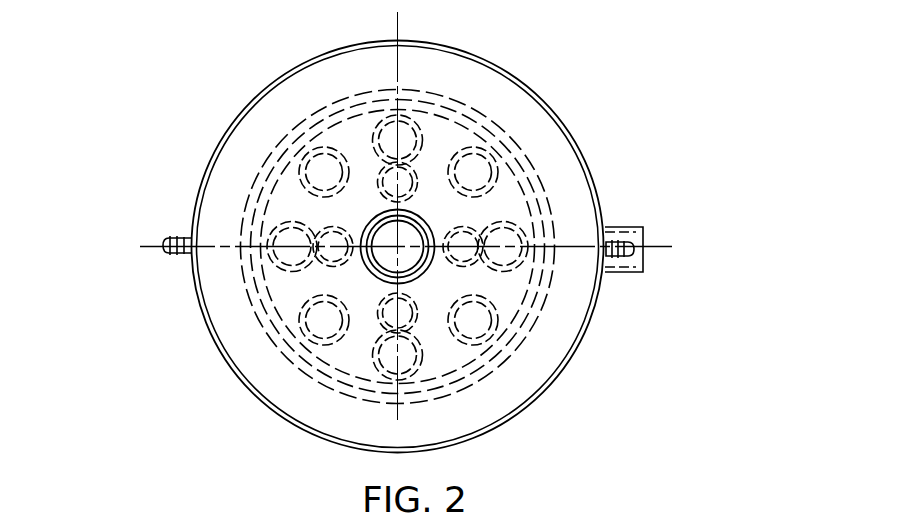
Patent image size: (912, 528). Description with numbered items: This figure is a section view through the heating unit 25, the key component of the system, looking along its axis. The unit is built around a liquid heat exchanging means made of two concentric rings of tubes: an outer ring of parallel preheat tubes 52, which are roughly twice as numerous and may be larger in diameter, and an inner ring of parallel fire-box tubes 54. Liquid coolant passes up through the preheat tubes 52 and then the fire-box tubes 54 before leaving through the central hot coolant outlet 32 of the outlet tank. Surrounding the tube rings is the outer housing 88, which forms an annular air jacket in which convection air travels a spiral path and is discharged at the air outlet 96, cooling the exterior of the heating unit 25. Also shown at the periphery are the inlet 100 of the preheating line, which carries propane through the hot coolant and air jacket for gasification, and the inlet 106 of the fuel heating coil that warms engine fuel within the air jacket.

The heating unit 25 is at (600, 115).
The hot coolant outlet 32 is at (420, 276).
The preheat tubes 52 is at (334, 148).
The fire-box tubes 54 is at (328, 228).
The outer housing 88 is at (230, 374).
The air outlet 96 is at (618, 273).
The inlet 100 is at (634, 251).
The inlet 106 is at (175, 254).